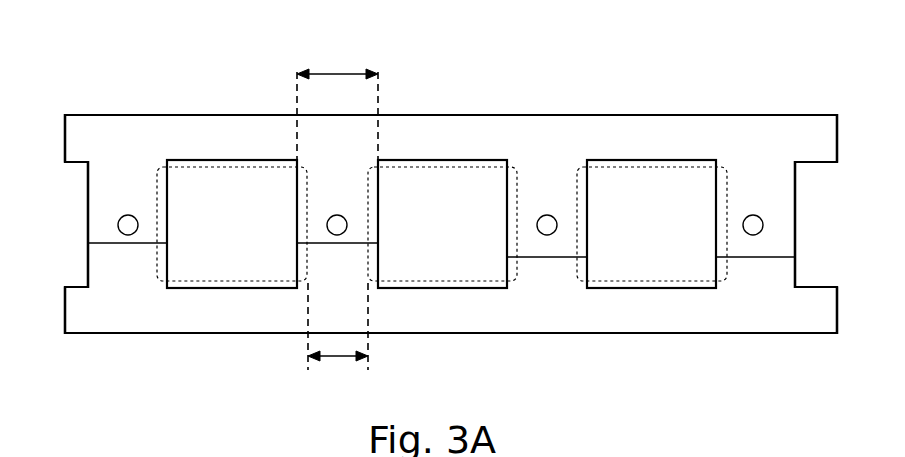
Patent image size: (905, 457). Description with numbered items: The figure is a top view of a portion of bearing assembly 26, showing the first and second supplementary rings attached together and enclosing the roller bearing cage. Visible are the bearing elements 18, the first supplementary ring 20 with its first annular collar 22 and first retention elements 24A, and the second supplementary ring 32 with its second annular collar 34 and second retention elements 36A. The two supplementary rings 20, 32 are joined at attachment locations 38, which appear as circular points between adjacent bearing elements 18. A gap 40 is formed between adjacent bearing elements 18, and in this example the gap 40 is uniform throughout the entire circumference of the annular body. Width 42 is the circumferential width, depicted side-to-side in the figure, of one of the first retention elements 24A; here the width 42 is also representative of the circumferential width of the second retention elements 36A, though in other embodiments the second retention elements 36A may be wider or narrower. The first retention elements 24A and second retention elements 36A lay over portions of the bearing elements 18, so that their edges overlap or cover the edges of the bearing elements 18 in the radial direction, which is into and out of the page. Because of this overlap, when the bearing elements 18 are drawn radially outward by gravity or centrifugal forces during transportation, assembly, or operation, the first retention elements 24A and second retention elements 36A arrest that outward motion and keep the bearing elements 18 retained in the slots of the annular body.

The bearing elements 18 is at (232, 167).
The first supplementary ring 20 is at (138, 334).
The first annular collar 22 is at (468, 313).
The first retention elements 24A is at (87, 252).
The bearing assembly 26 is at (725, 80).
The second supplementary ring 32 is at (134, 114).
The second annular collar 34 is at (540, 140).
The second retention elements 36A is at (87, 192).
The attachment locations 38 is at (128, 225).
The gap 40 is at (340, 360).
The width 42 is at (340, 72).